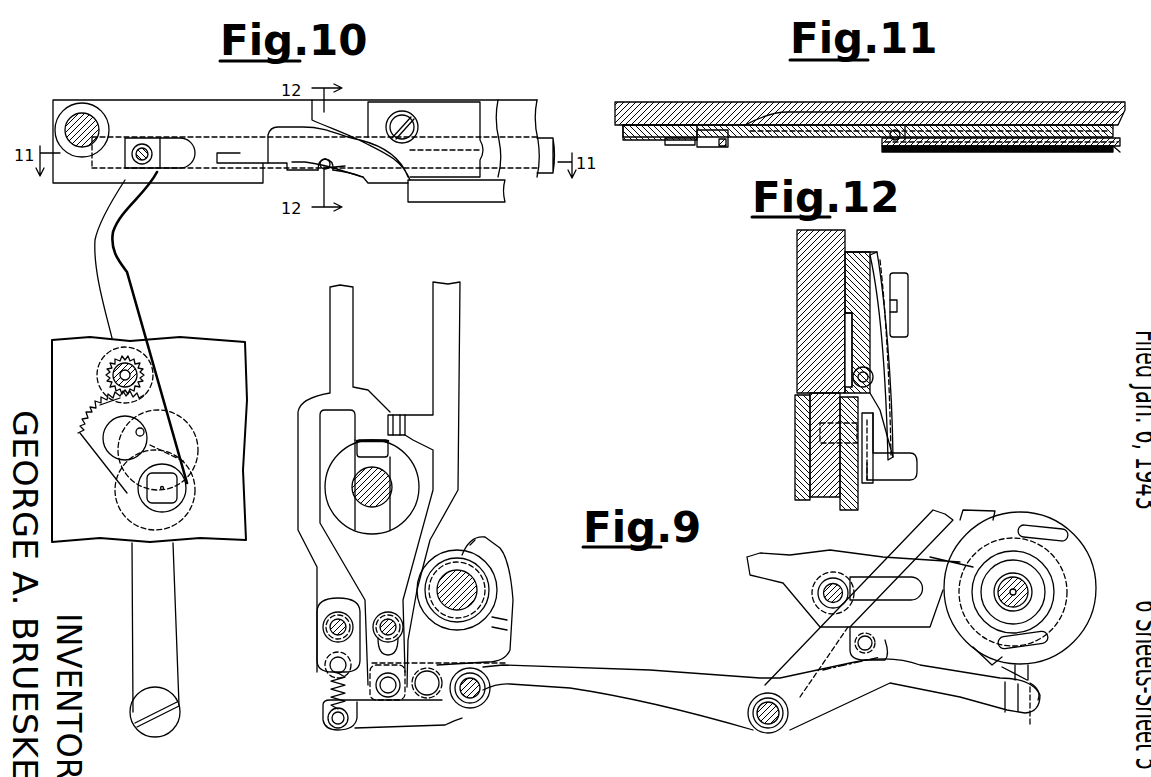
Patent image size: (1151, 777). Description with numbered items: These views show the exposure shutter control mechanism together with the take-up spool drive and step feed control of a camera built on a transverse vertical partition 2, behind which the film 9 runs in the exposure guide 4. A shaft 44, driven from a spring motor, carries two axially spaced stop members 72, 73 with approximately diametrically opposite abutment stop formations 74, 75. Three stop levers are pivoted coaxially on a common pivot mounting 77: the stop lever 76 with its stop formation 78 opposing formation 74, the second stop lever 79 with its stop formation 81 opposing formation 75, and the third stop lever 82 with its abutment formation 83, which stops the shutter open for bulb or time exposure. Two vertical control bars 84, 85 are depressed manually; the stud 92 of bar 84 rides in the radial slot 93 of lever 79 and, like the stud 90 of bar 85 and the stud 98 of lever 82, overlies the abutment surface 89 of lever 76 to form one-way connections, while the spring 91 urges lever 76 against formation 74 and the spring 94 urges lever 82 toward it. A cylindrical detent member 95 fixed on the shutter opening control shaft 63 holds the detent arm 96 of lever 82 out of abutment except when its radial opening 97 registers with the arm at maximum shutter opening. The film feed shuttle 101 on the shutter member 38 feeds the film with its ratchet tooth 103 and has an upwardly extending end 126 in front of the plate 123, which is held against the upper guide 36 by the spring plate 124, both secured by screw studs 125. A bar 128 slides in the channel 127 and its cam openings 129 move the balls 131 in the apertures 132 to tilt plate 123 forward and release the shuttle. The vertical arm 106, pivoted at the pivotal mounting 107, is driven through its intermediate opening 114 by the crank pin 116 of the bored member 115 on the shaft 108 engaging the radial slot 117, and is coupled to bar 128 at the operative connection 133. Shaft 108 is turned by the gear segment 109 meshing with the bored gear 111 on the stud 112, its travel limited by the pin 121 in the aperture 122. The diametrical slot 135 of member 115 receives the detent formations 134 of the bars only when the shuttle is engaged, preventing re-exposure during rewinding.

In FIG. 11, the partition 2 is at (712, 108).
In FIG. 12, the partition 2 is at (797, 302).
In FIG. 11, the exposure guide 4 is at (970, 108).
In FIG. 12, the exposure guide 4 is at (800, 415).
In FIG. 12, the film 9 is at (813, 470).
In FIG. 10, the shouldered guides 36 is at (520, 108).
In FIG. 11, the shouldered guides 36 is at (803, 139).
In FIG. 12, the shouldered guides 36 is at (863, 252).
In FIG. 12, the light shutter member 38 is at (858, 480).
In FIG. 9, the shaft 44 is at (1015, 590).
In FIG. 9, the shaft 63 is at (473, 589).
In FIG. 9, the stop member 72 is at (1070, 528).
In FIG. 9, the stop member 73 is at (1063, 620).
In FIG. 9, the abutment stop formation 74 is at (1043, 673).
In FIG. 9, the abutment stop formation 75 is at (963, 510).
In FIG. 9, the stop lever 76 is at (793, 650).
In FIG. 9, the pivot mounting 77 is at (753, 726).
In FIG. 9, the abutment stop formation 78 is at (935, 516).
In FIG. 9, the second stop lever 79 is at (427, 663).
In FIG. 9, the abutment stop formation 81 is at (1033, 720).
In FIG. 9, the third stop lever 82 is at (862, 688).
In FIG. 9, the abutment formation 83 is at (1040, 688).
In FIG. 9, the control bar 84 is at (460, 375).
In FIG. 9, the control bar 85 is at (344, 478).
In FIG. 9, the abutment surface 89 is at (349, 728).
In FIG. 9, the stud 90 is at (329, 668).
In FIG. 9, the spring 91 is at (330, 692).
In FIG. 9, the stud 92 is at (388, 700).
In FIG. 9, the radial slot 93 is at (420, 700).
In FIG. 9, the spring 94 is at (874, 643).
In FIG. 9, the cylindrical detent member 95 is at (487, 608).
In FIG. 9, the detent arm 96 is at (462, 566).
In FIG. 9, the radial opening 97 is at (490, 561).
In FIG. 9, the stud 98 is at (455, 705).
In FIG. 12, the film feed shuttle 101 is at (873, 433).
In FIG. 12, the ratchet tooth 103 is at (820, 440).
In FIG. 10, the vertical arm 106 is at (120, 288).
In FIG. 11, the vertical arm 106 is at (697, 147).
In FIG. 10, the pivotal mounting 107 is at (131, 716).
In FIG. 10, the shaft 108 is at (164, 495).
In FIG. 9, the shaft 108 is at (392, 485).
In FIG. 10, the gear segment 109 is at (147, 396).
In FIG. 10, the bored gear 111 is at (105, 394).
In FIG. 10, the stud 112 is at (108, 372).
In FIG. 10, the intermediate opening 114 is at (112, 497).
In FIG. 9, the bored member 115 is at (335, 500).
In FIG. 10, the crank pin 116 is at (186, 462).
In FIG. 10, the radial slot 117 is at (178, 445).
In FIG. 10, the pin 121 is at (143, 433).
In FIG. 10, the aperture 122 is at (107, 445).
In FIG. 10, the plate 123 is at (434, 200).
In FIG. 11, the plate 123 is at (920, 147).
In FIG. 12, the plate 123 is at (887, 410).
In FIG. 10, the spring plate 124 is at (458, 105).
In FIG. 11, the spring plate 124 is at (1118, 149).
In FIG. 12, the spring plate 124 is at (887, 353).
In FIG. 10, the screw studs 125 is at (404, 112).
In FIG. 12, the screw studs 125 is at (910, 320).
In FIG. 12, the upwardly extending end 126 is at (912, 453).
In FIG. 10, the channel 127 is at (445, 133).
In FIG. 11, the channel 127 is at (1027, 127).
In FIG. 12, the channel 127 is at (845, 333).
In FIG. 10, the bar 128 is at (300, 130).
In FIG. 11, the bar 128 is at (917, 133).
In FIG. 12, the bar 128 is at (850, 352).
In FIG. 10, the cam openings 129 is at (325, 160).
In FIG. 11, the cam openings 129 is at (858, 128).
In FIG. 10, the balls 131 is at (333, 172).
In FIG. 11, the balls 131 is at (895, 130).
In FIG. 12, the balls 131 is at (852, 382).
In FIG. 11, the apertures 132 is at (873, 143).
In FIG. 12, the apertures 132 is at (877, 363).
In FIG. 10, the operative connection 133 is at (165, 118).
In FIG. 11, the operative connection 133 is at (715, 149).
In FIG. 9, the detent formations 134 is at (388, 414).
In FIG. 9, the diametrical slot 135 is at (390, 462).